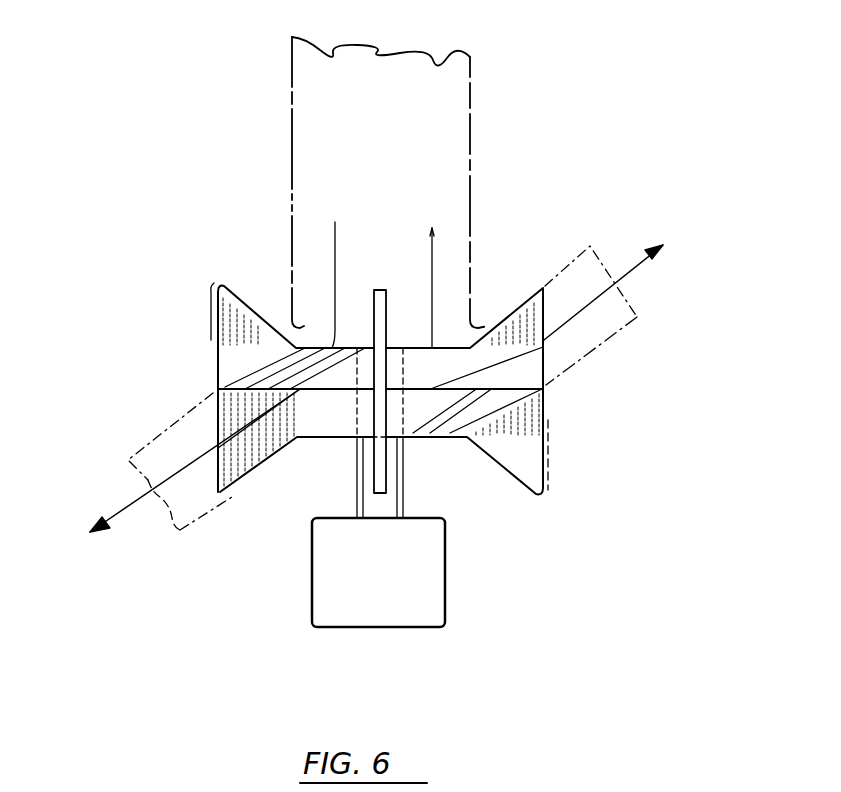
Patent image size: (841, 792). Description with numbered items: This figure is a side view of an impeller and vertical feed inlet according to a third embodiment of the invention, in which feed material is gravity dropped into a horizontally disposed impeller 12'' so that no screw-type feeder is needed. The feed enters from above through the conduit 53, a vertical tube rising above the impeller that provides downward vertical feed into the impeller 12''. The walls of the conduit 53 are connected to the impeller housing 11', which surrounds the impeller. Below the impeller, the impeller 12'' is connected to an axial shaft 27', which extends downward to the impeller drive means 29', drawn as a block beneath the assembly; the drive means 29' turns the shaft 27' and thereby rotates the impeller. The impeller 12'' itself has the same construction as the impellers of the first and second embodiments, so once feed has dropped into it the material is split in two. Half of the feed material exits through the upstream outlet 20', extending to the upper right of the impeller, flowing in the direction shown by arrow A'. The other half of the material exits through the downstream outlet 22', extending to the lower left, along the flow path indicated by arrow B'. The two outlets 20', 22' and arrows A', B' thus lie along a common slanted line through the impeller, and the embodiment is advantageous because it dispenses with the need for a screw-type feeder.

The conduit 53 is at (462, 101).
The impeller 12'' is at (420, 388).
The axial shaft 27' is at (342, 477).
The impeller drive means 29' is at (421, 572).
The downstream outlet 22' is at (166, 461).
The upstream outlet 20' is at (564, 305).
The impeller housing 11' is at (592, 466).
The arrow A' is at (603, 272).
The arrow B' is at (174, 460).